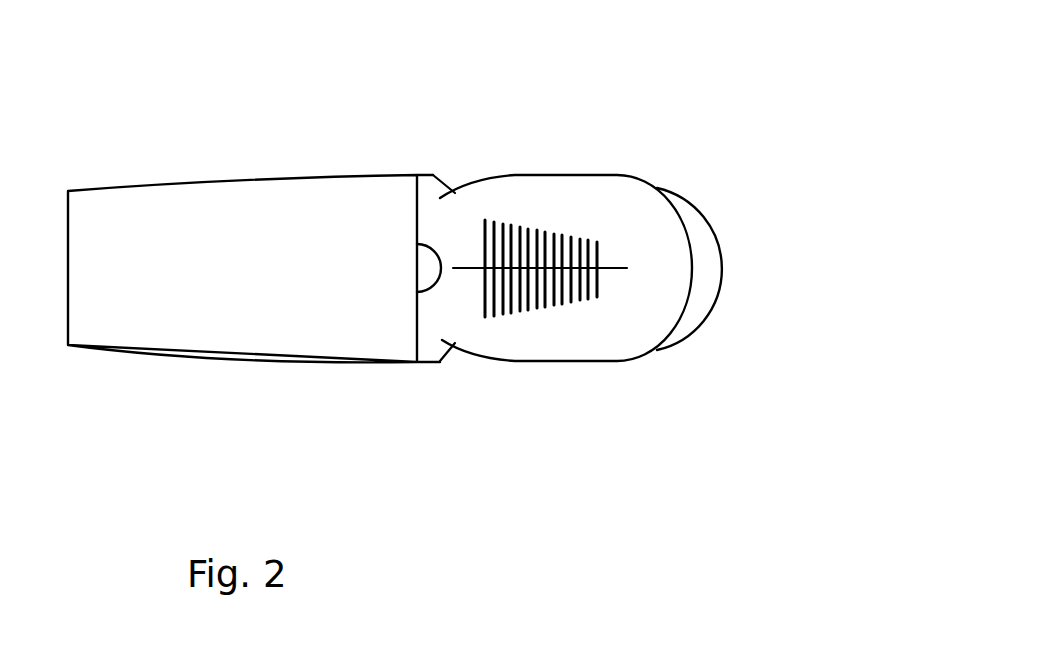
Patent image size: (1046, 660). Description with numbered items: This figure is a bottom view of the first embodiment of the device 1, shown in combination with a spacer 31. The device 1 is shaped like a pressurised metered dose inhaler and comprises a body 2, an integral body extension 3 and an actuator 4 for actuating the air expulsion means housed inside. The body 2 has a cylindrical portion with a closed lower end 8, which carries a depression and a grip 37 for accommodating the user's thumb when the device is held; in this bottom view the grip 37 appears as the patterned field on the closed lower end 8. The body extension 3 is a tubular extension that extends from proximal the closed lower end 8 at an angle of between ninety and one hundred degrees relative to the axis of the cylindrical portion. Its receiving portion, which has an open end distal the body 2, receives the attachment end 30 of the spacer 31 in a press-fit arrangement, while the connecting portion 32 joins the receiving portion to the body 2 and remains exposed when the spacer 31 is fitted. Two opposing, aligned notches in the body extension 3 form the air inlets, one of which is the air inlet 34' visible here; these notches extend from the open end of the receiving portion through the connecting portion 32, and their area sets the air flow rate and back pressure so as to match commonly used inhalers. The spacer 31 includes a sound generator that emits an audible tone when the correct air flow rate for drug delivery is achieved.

The device 1 is at (748, 136).
The body 2 is at (549, 148).
The body extension 3 is at (428, 402).
The actuator 4 is at (736, 250).
The closed lower end 8 is at (577, 342).
The attachment end 30 is at (418, 207).
The spacer 31 is at (202, 358).
The connecting portion 32 is at (432, 352).
The air inlet 34' is at (354, 350).
The grip 37 is at (562, 228).